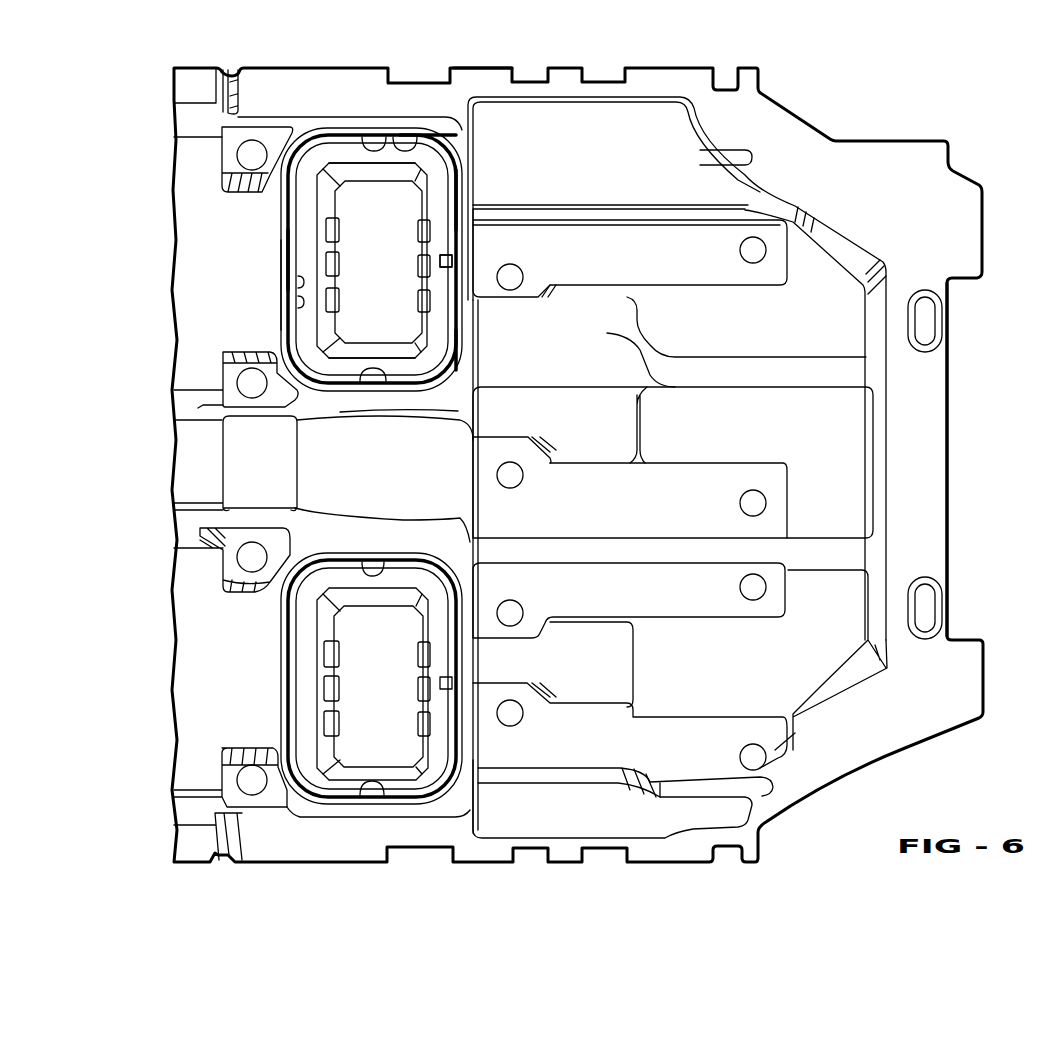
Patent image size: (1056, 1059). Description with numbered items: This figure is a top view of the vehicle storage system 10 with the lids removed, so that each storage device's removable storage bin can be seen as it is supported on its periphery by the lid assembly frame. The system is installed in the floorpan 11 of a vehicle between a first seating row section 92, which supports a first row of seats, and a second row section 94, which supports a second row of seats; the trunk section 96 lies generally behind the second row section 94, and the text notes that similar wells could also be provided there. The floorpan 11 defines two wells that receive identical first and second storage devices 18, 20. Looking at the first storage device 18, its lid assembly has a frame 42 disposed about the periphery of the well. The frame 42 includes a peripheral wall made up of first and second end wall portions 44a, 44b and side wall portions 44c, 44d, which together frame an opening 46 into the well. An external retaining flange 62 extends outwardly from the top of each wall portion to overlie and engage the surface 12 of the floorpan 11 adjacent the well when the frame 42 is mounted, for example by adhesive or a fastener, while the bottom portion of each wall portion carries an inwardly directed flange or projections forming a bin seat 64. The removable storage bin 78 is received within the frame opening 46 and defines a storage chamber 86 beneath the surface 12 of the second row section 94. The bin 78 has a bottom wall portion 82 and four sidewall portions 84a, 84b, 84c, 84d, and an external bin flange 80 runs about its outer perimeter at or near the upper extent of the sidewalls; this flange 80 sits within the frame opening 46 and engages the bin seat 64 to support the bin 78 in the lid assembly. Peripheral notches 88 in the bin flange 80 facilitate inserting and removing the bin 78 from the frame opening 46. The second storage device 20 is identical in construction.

The vehicle storage system 10 is at (147, 165).
The floorpan 11 is at (172, 80).
The surface 12 is at (366, 247).
The first storage device 18 is at (297, 391).
The second storage device 20 is at (278, 798).
The frame 42 is at (280, 287).
The first end wall portion 44a is at (298, 283).
The second end wall portion 44b is at (470, 362).
The side wall portion 44c is at (428, 133).
The side wall portion 44d is at (445, 235).
The frame opening 46 is at (297, 300).
The external retaining flange 62 is at (333, 393).
The bin seat 64 is at (367, 144).
The removable storage bin 78 is at (289, 336).
The external bin flange 80 is at (296, 262).
The bottom wall portion 82 is at (391, 265).
The sidewall portion 84a is at (340, 212).
The sidewall portion 84b is at (360, 343).
The sidewall portion 84c is at (385, 183).
The sidewall portion 84d is at (470, 327).
The storage chamber 86 is at (448, 200).
The peripheral notches 88 is at (373, 148).
The first seating row section 92 is at (187, 68).
The second row section 94 is at (485, 67).
The trunk section 96 is at (923, 141).